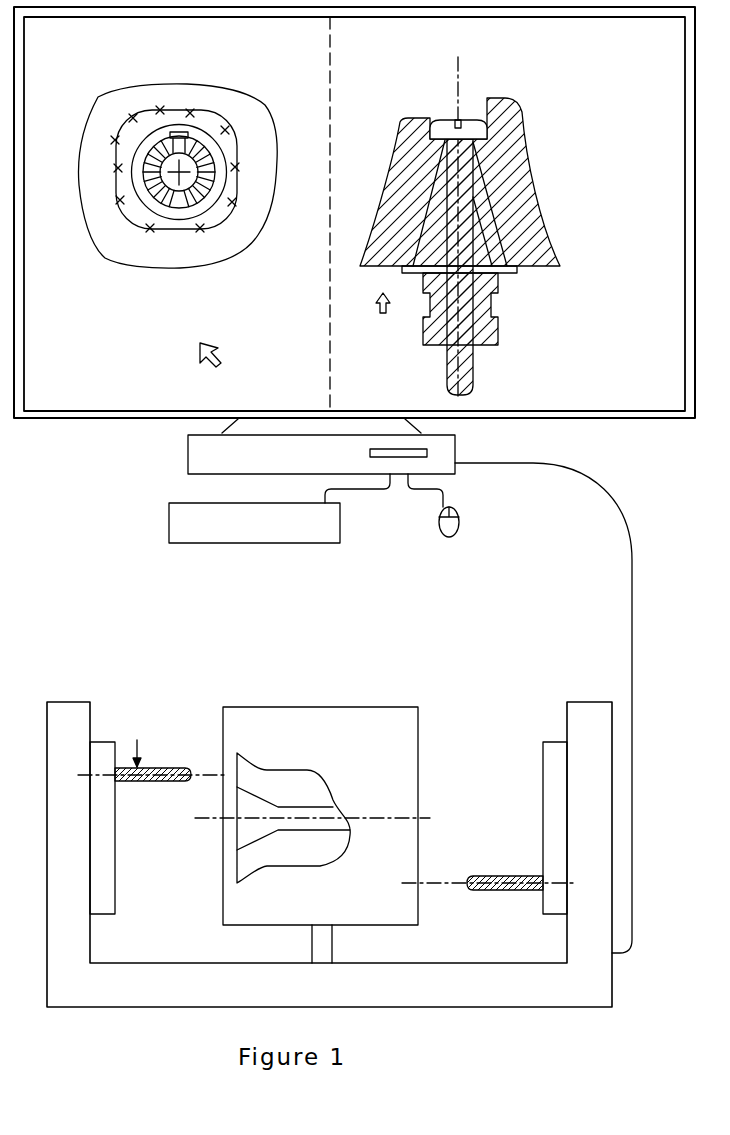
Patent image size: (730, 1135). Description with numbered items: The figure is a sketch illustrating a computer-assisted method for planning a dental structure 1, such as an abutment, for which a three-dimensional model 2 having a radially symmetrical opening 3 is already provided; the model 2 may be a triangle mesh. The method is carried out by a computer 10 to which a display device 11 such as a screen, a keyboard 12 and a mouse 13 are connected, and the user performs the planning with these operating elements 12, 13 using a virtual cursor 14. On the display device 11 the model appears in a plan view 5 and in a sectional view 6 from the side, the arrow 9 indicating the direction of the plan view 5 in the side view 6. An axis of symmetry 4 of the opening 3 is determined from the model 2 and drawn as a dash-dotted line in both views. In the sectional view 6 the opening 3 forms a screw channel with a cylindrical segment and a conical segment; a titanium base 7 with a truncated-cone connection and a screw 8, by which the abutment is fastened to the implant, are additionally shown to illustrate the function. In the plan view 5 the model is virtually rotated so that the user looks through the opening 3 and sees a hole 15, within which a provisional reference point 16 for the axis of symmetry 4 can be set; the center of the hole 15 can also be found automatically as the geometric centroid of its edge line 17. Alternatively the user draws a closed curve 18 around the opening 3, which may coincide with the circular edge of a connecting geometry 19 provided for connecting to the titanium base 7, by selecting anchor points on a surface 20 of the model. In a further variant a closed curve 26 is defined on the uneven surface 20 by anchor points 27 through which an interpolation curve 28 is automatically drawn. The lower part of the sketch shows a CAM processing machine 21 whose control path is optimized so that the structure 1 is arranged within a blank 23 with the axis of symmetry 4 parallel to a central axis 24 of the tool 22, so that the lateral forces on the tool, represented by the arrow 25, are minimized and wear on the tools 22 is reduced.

The dental structure 1 is at (307, 770).
The 3D model 2 is at (328, 215).
The radially symmetrical opening 3 is at (213, 147).
The axis of symmetry 4 is at (180, 168).
The plan view 5 is at (117, 272).
The sectional view 6 is at (530, 304).
The titanium base 7 is at (497, 233).
The screw 8 is at (462, 120).
The arrow 9 is at (377, 303).
The computer 10 is at (452, 466).
The display device 11 is at (622, 421).
The keyboard 12 is at (309, 533).
The mouse 13 is at (450, 537).
The virtual cursor 14 is at (220, 354).
The hole 15 is at (188, 156).
The provisional reference point 16 is at (313, 191).
The edge line 17 is at (197, 185).
The closed curve 18 is at (168, 233).
The connecting geometry 19 is at (202, 210).
The surface 20 is at (194, 215).
The CAM processing machine 21 is at (580, 720).
The tool 22 is at (173, 768).
The blank 23 is at (400, 718).
The central axis 24 is at (210, 772).
The arrow 25 is at (137, 740).
The closed curve 26 is at (176, 182).
The anchor points 27 is at (133, 120).
The interpolation curve 28 is at (192, 134).